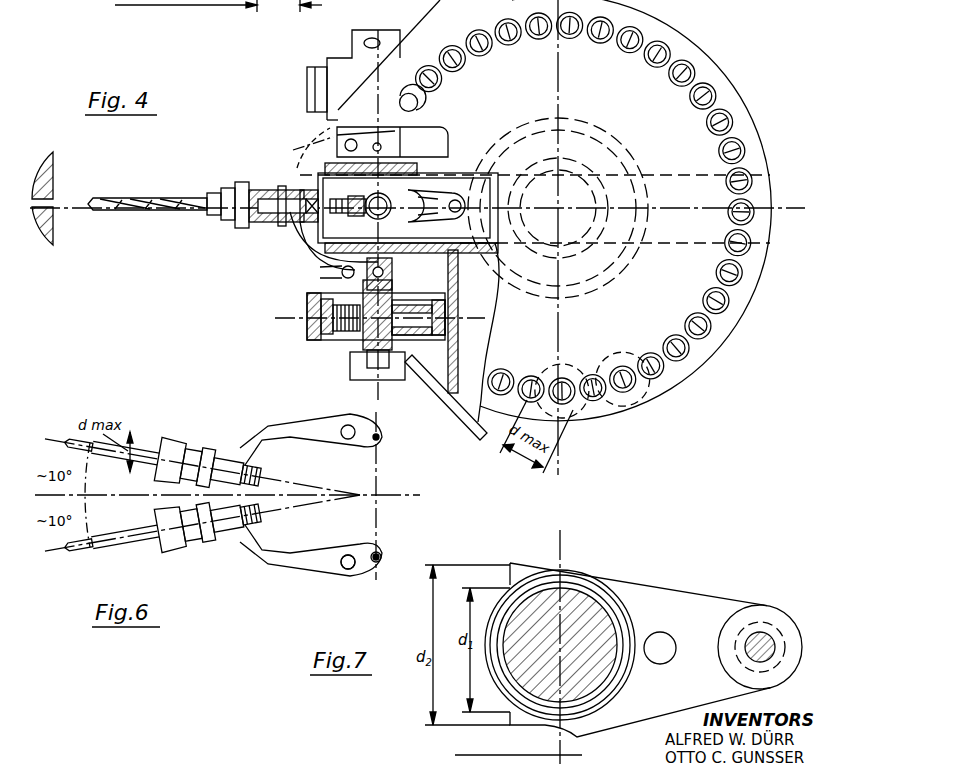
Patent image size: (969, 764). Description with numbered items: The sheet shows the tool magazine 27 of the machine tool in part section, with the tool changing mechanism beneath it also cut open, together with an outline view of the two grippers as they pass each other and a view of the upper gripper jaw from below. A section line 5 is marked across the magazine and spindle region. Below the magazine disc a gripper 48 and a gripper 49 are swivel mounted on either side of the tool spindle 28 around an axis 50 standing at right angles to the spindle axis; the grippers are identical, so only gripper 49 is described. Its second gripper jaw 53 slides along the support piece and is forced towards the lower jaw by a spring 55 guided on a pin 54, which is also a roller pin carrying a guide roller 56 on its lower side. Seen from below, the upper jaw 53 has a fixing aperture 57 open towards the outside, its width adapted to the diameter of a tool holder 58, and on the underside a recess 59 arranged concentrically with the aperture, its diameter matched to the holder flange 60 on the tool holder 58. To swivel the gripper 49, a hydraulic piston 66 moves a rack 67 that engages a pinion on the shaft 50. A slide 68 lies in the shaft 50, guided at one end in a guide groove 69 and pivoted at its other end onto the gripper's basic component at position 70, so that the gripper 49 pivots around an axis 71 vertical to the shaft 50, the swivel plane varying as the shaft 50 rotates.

In FIG. 4, the section line 5- 5 is at (72, 208).
In FIG. 4, the tool magazine 27 is at (706, 49).
In FIG. 4, the tool spindle 28 is at (297, 167).
In FIG. 4, the gripper 48 is at (423, 140).
In FIG. 6, the gripper 48 is at (260, 446).
In FIG. 4, the gripper 49 is at (270, 222).
In FIG. 6, the gripper 49 is at (268, 560).
In FIG. 4, the axis 50 is at (345, 365).
In FIG. 7, the second gripper jaw 53 is at (668, 590).
In FIG. 7, the pin 54 is at (768, 636).
In FIG. 7, the spring 55 is at (740, 628).
In FIG. 6, the guide roller 56 is at (268, 512).
In FIG. 7, the fixing aperture 57 is at (468, 710).
In FIG. 7, the tool holder 58 is at (520, 654).
In FIG. 7, the recess 59 is at (586, 572).
In FIG. 7, the holder flange 60 is at (620, 613).
In FIG. 4, the hydraulic piston 66 is at (310, 302).
In FIG. 4, the rack 67 is at (305, 332).
In FIG. 4, the slide 68 is at (338, 352).
In FIG. 4, the guide groove 69 is at (398, 372).
In FIG. 4, the position 70 is at (394, 273).
In FIG. 6, the position 70 is at (380, 556).
In FIG. 4, the axis 71 is at (341, 272).
In FIG. 6, the axis 71 is at (350, 556).